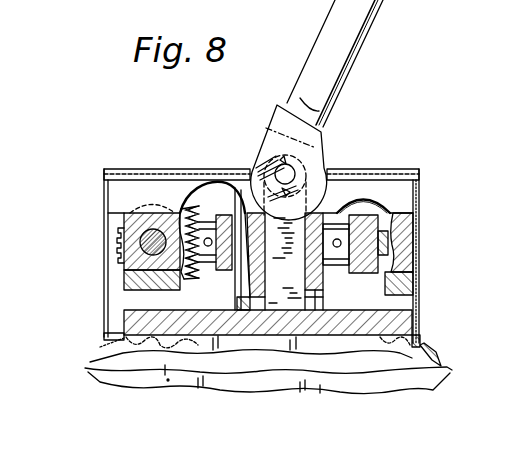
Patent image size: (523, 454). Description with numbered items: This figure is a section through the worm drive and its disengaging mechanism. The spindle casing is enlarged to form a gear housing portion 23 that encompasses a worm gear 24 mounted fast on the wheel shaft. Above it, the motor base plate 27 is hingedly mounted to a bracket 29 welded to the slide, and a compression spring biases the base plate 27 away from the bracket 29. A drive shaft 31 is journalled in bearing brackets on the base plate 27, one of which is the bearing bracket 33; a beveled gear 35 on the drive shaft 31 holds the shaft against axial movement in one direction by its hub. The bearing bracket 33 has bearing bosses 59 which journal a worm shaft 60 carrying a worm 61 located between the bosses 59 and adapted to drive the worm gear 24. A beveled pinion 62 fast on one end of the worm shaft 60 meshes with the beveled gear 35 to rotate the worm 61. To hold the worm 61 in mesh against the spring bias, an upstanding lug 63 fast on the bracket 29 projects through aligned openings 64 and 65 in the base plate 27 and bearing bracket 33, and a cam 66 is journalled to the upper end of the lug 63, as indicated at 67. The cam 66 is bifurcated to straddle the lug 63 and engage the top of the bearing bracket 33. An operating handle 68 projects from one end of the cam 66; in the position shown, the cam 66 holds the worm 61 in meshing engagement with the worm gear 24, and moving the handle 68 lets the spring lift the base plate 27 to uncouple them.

The gear housing portion 23 is at (330, 388).
The worm gear 24 is at (416, 352).
The base plate 27 is at (133, 283).
The bracket 29 is at (127, 312).
The drive shaft 31 is at (145, 247).
The bearing bracket 33 is at (135, 223).
The beveled gear 35 is at (118, 237).
The bearing bosses 59 is at (223, 214).
The worm shaft 60 is at (385, 240).
The worm 61 is at (238, 297).
The beveled pinion 62 is at (186, 212).
The upstanding lug 63 is at (284, 261).
The opening 64 is at (262, 284).
The opening 65 is at (259, 210).
The cam 66 is at (302, 152).
The journal of the cam 67 is at (291, 173).
The operating handle 68 is at (350, 29).